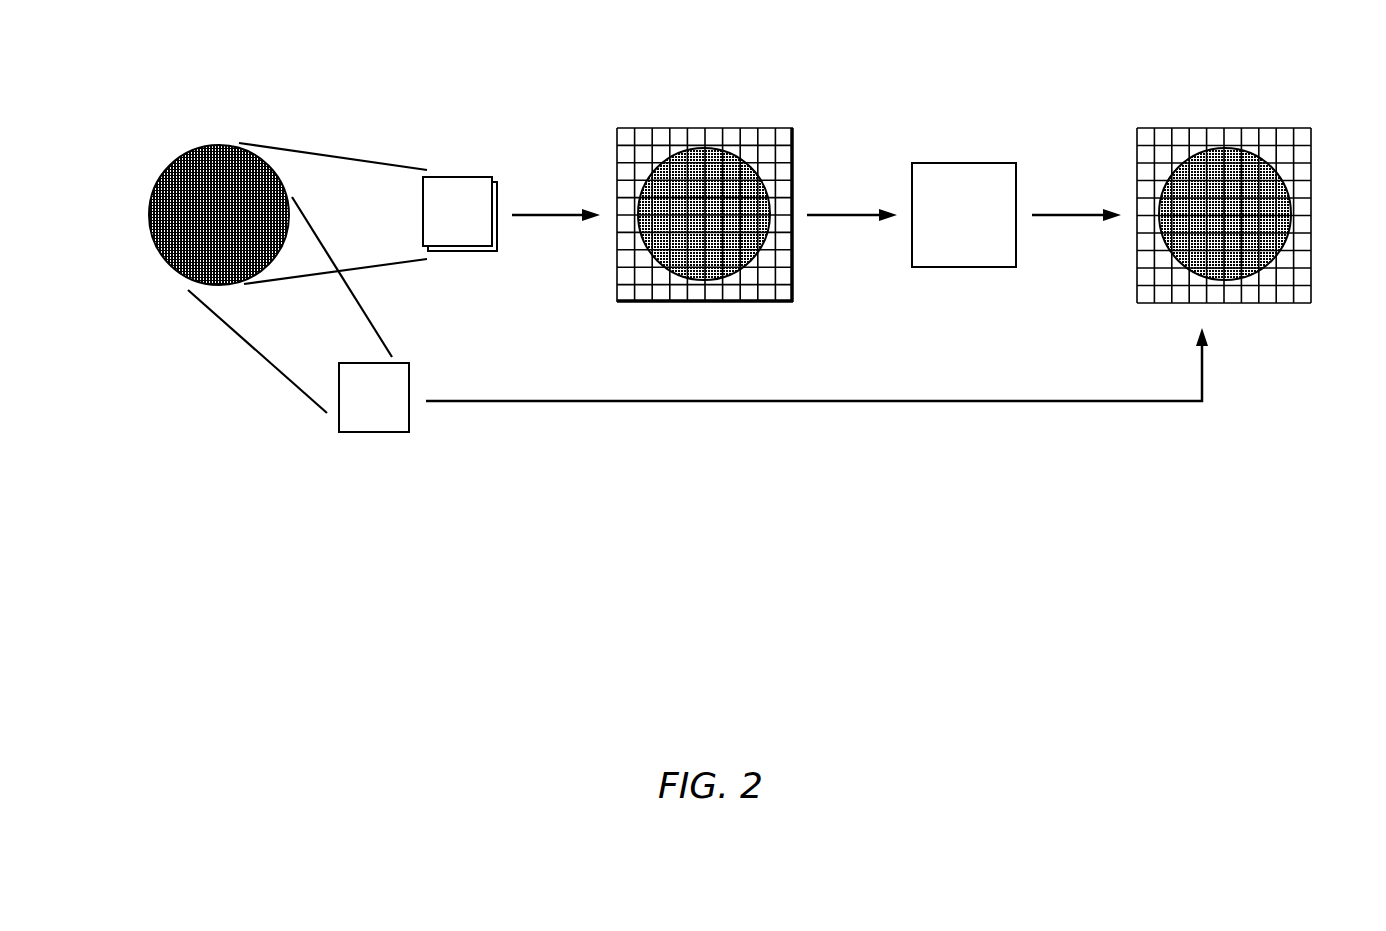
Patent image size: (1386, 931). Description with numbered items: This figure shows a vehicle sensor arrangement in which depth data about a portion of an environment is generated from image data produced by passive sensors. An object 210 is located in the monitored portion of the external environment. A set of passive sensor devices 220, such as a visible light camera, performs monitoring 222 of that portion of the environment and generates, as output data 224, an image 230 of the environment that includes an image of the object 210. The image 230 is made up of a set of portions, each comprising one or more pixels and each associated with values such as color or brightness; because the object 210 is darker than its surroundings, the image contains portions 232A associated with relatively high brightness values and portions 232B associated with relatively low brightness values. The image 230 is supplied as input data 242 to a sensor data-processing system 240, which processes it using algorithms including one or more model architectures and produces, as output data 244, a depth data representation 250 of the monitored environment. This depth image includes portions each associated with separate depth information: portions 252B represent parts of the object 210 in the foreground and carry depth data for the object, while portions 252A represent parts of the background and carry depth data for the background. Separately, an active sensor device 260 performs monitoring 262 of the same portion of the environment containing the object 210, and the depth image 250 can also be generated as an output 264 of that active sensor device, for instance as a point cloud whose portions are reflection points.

The object 210 is at (219, 179).
The passive sensor devices 220 is at (475, 177).
The monitoring 222 is at (333, 215).
The output data 224 is at (556, 177).
The image 230 is at (744, 179).
The portions 232A is at (779, 143).
The portions 232B is at (747, 212).
The sensor data-processing system 240 is at (965, 179).
The input data 242 is at (852, 262).
The output data 244 is at (1076, 262).
The depth data representation 250 is at (1239, 195).
The portions 252A is at (1284, 136).
The portions 252B is at (1225, 246).
The active sensor device 260 is at (351, 425).
The monitoring 262 is at (257, 366).
The output 264 is at (817, 392).